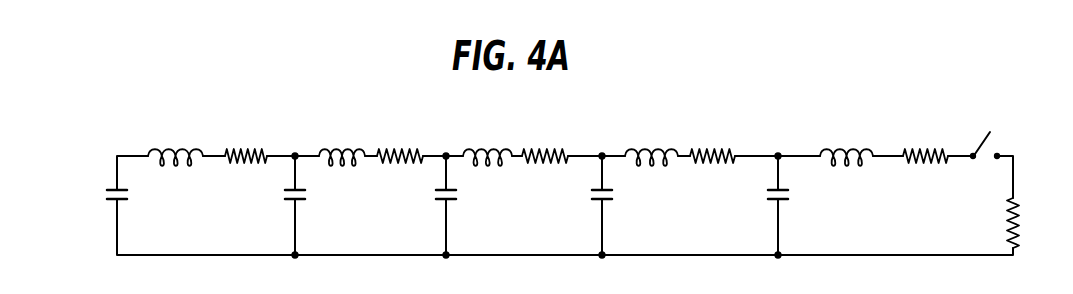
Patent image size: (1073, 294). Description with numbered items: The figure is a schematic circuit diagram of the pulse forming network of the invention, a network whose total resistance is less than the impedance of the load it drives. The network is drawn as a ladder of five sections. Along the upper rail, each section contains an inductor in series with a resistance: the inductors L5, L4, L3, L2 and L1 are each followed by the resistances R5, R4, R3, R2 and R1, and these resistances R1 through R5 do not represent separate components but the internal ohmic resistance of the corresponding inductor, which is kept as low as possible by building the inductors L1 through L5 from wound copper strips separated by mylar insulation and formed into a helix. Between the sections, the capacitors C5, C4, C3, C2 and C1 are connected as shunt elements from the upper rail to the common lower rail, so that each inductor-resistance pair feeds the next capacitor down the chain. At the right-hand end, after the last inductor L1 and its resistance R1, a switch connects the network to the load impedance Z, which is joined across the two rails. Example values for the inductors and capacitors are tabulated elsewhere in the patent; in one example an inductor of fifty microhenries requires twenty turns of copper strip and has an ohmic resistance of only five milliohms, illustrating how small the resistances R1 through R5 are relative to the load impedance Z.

The inductor L1 is at (846, 142).
The inductor L2 is at (651, 142).
The inductor L3 is at (487, 142).
The inductor L4 is at (342, 142).
The inductor L5 is at (175, 142).
The internal resistance of inductor R1 is at (925, 140).
The internal resistance of inductor R2 is at (712, 140).
The internal resistance of inductor R3 is at (545, 140).
The internal resistance of inductor R4 is at (400, 140).
The internal resistance of inductor R5 is at (246, 140).
The capacitor C1 is at (795, 201).
The capacitor C2 is at (616, 201).
The capacitor C3 is at (461, 201).
The capacitor C4 is at (311, 201).
The capacitor C5 is at (134, 201).
The load impedance Z is at (1024, 223).